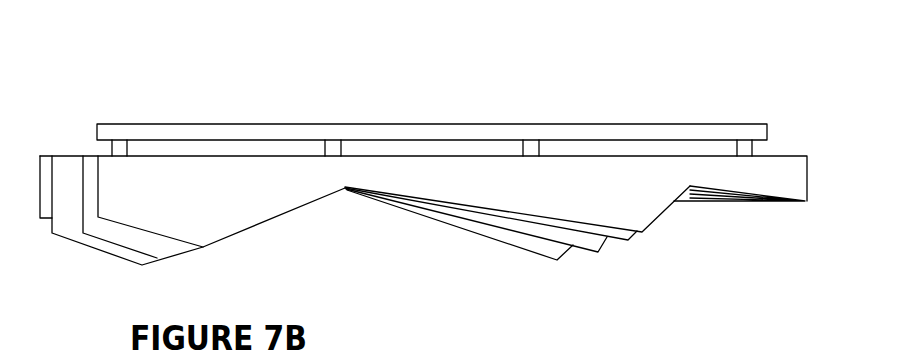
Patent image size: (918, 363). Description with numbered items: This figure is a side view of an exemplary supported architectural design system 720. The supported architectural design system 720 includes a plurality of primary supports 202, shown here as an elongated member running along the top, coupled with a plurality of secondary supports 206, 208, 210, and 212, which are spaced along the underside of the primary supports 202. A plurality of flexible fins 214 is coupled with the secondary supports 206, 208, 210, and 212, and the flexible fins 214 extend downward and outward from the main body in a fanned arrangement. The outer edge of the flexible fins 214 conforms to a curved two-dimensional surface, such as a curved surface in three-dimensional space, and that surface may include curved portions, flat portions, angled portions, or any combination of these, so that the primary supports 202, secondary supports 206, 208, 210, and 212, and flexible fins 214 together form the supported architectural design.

The supported architectural design system 720 is at (700, 88).
The primary support 202 is at (198, 123).
The secondary support 206 is at (127, 142).
The secondary support 208 is at (345, 147).
The secondary support 210 is at (540, 147).
The secondary support 212 is at (753, 145).
The flexible fin 214 is at (537, 245).